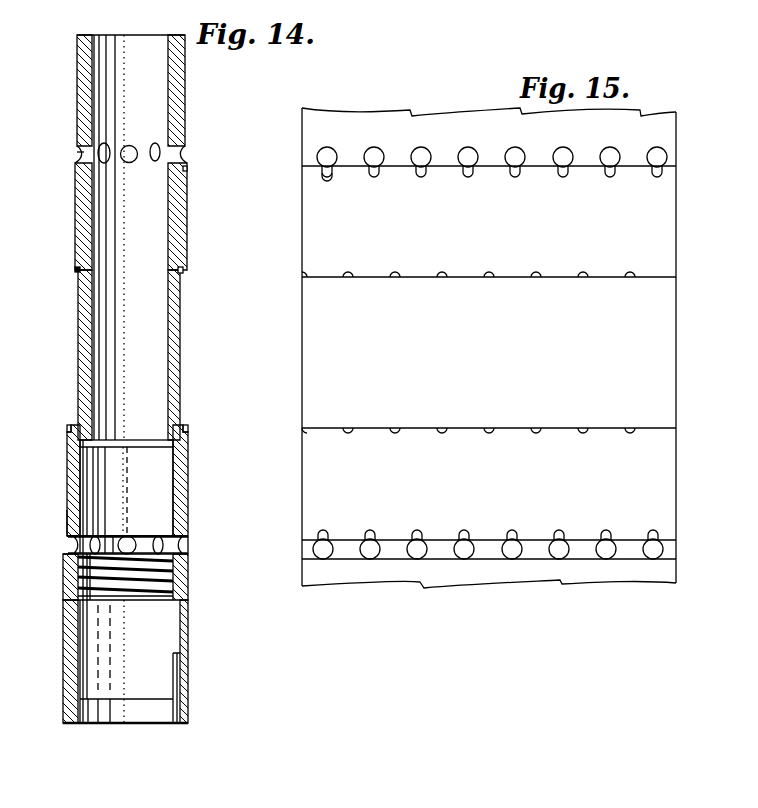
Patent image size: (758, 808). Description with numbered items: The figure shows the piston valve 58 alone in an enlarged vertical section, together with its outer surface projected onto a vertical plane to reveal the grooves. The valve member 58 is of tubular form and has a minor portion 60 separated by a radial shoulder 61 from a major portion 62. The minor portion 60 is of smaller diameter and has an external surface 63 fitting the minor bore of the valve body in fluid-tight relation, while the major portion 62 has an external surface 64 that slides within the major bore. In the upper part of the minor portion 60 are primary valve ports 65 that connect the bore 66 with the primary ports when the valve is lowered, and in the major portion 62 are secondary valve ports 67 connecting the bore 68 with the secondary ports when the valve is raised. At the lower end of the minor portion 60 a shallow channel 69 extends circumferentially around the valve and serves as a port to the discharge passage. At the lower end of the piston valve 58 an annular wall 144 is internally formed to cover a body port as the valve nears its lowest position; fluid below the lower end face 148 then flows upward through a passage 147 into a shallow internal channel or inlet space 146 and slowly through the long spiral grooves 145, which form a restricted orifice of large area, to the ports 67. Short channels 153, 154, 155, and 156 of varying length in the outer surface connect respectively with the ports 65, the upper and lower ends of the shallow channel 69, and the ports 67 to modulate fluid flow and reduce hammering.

In FIG. 14, the piston valve 58 is at (188, 215).
In FIG. 14, the minor portion 60 is at (186, 181).
In FIG. 14, the radial shoulder 61 is at (186, 425).
In FIG. 14, the major portion 62 is at (189, 490).
In FIG. 14, the external surface 63 is at (75, 218).
In FIG. 14, the external surface 64 is at (66, 516).
In FIG. 14, the primary valve ports 65 is at (158, 148).
In FIG. 15, the primary valve ports 65 is at (662, 162).
In FIG. 14, the bore 66 is at (97, 88).
In FIG. 14, the secondary valve ports 67 is at (127, 545).
In FIG. 15, the secondary valve ports 67 is at (655, 557).
In FIG. 14, the bore 68 is at (85, 467).
In FIG. 14, the shallow channel 69 is at (181, 310).
In FIG. 15, the shallow channel 69 is at (655, 352).
In FIG. 14, the annular wall 144 is at (170, 718).
In FIG. 14, the spiral grooves 145 is at (187, 575).
In FIG. 14, the inlet space 146 is at (168, 630).
In FIG. 14, the passage 147 is at (187, 683).
In FIG. 14, the lower end face 148 is at (72, 725).
In FIG. 14, the short channel 153 is at (78, 165).
In FIG. 15, the short channel 153 is at (328, 170).
In FIG. 14, the short channel 154 is at (75, 271).
In FIG. 15, the short channel 154 is at (349, 280).
In FIG. 14, the short channel 155 is at (68, 427).
In FIG. 15, the short channel 155 is at (347, 428).
In FIG. 14, the short channel 156 is at (72, 538).
In FIG. 15, the short channel 156 is at (323, 537).